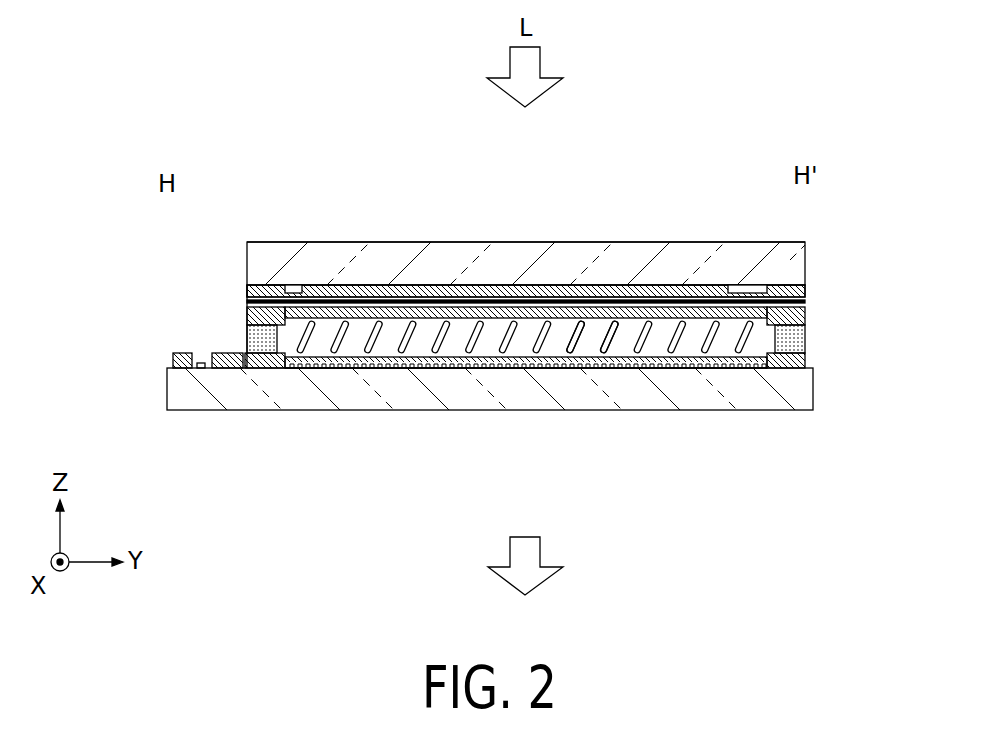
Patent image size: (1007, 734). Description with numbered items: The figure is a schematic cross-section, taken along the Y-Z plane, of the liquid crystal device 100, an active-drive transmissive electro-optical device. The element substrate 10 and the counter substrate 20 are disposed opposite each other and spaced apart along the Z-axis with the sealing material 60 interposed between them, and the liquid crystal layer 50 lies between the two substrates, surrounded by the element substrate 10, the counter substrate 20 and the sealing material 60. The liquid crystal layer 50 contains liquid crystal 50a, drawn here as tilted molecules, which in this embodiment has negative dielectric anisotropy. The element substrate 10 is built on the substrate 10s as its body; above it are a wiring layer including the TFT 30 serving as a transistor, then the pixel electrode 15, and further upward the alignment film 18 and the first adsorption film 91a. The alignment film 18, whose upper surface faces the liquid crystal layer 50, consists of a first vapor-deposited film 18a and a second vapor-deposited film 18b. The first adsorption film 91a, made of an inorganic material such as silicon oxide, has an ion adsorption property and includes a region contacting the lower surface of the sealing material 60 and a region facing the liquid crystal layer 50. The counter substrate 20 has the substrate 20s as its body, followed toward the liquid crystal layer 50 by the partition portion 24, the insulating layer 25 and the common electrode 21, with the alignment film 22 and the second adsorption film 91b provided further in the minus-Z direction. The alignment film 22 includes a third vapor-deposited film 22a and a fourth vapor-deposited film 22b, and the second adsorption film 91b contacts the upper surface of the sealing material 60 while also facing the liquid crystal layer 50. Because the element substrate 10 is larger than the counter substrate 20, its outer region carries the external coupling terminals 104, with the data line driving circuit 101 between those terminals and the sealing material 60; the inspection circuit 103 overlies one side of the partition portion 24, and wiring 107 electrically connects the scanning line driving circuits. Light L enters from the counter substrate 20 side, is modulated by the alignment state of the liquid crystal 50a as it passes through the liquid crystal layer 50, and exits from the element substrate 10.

The liquid crystal device 100 is at (910, 82).
The element substrate 10 is at (885, 353).
The substrate 10s is at (518, 368).
The pixel electrode 15 is at (324, 366).
The alignment film 18 is at (405, 487).
The first vapor-deposited film 18a is at (388, 357).
The second vapor-deposited film 18b is at (526, 365).
The counter substrate 20 is at (885, 242).
The substrate 20s is at (502, 263).
The common electrode 21 is at (688, 312).
The alignment film 22 is at (583, 164).
The third vapor-deposited film 22a is at (572, 290).
The fourth vapor-deposited film 22b is at (526, 291).
The partition portion 24 is at (293, 285).
The insulating layer 25 is at (419, 300).
The TFT 30 is at (333, 487).
The liquid crystal layer 50 is at (657, 342).
The liquid crystal 50a is at (615, 345).
The sealing material 60 is at (247, 342).
The first adsorption film 91a is at (266, 368).
The second adsorption film 91b is at (247, 316).
The data line driving circuit 101 is at (220, 368).
The inspection circuit 103 is at (747, 368).
The external coupling terminals 104 is at (173, 360).
The wiring 107 is at (760, 358).